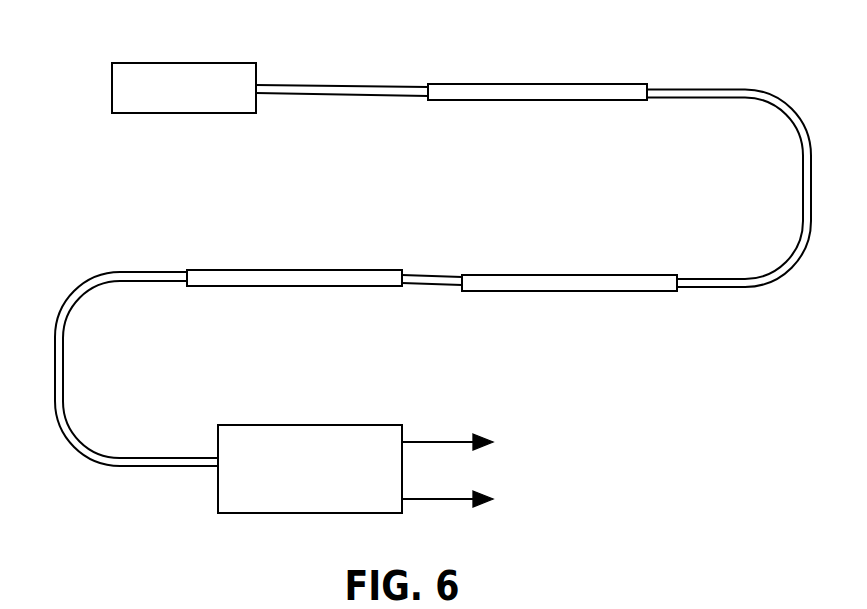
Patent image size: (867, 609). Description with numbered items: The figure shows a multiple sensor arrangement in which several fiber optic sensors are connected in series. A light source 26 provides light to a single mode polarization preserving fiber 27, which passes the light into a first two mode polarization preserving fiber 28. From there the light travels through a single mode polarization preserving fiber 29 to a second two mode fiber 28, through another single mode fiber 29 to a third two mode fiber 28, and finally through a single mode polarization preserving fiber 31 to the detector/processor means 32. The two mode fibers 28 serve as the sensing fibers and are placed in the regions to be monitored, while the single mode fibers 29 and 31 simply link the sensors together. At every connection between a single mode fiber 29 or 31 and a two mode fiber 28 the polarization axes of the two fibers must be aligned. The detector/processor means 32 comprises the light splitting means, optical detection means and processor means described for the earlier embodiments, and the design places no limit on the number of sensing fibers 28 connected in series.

The light source 26 is at (155, 63).
The single mode polarization preserving fiber 27 is at (338, 85).
The two mode polarization preserving fiber 28 is at (511, 84).
The single mode polarization preserving fiber 29 is at (792, 111).
The single mode polarization preserving fiber 31 is at (97, 273).
The detector/processor means 32 is at (287, 425).